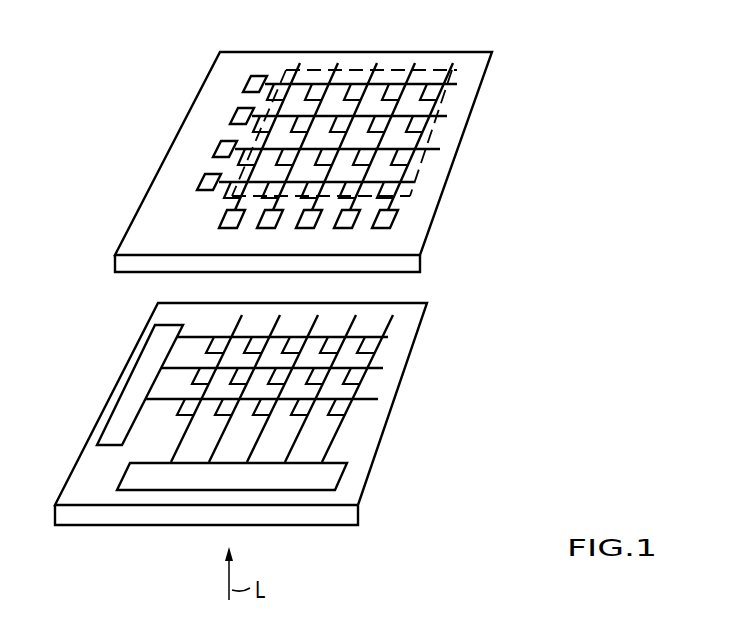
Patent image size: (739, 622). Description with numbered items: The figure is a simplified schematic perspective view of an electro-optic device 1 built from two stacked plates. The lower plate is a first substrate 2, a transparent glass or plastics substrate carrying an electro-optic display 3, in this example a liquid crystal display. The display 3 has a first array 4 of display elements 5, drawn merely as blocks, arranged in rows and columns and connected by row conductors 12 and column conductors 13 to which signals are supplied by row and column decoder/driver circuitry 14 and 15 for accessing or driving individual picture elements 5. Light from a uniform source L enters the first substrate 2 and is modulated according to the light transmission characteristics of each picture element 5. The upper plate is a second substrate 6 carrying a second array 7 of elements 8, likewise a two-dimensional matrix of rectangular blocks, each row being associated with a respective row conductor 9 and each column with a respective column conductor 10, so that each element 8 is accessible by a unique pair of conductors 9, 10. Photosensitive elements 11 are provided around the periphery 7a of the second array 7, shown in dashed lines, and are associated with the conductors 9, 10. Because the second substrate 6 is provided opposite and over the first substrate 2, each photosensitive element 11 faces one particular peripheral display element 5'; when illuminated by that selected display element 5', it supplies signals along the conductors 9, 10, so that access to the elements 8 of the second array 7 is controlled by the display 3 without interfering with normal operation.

The electro-optic device 1 is at (510, 282).
The first substrate 2 is at (330, 515).
The electro-optic display 3 is at (364, 463).
The first array 4 is at (384, 382).
The display elements 5 is at (310, 329).
The selected display elements 5' is at (260, 439).
The second substrate 6 is at (408, 263).
The second array 7 is at (438, 172).
The periphery 7a is at (410, 192).
The elements 8 is at (420, 128).
The row conductors 9 is at (455, 88).
The column conductors 10 is at (455, 74).
The photosensitive elements 11 is at (247, 84).
The row conductors 12 is at (388, 340).
The column conductors 13 is at (392, 325).
The row decoder/driver circuitry 14 is at (107, 425).
The column decoder/driver circuitry 15 is at (193, 478).